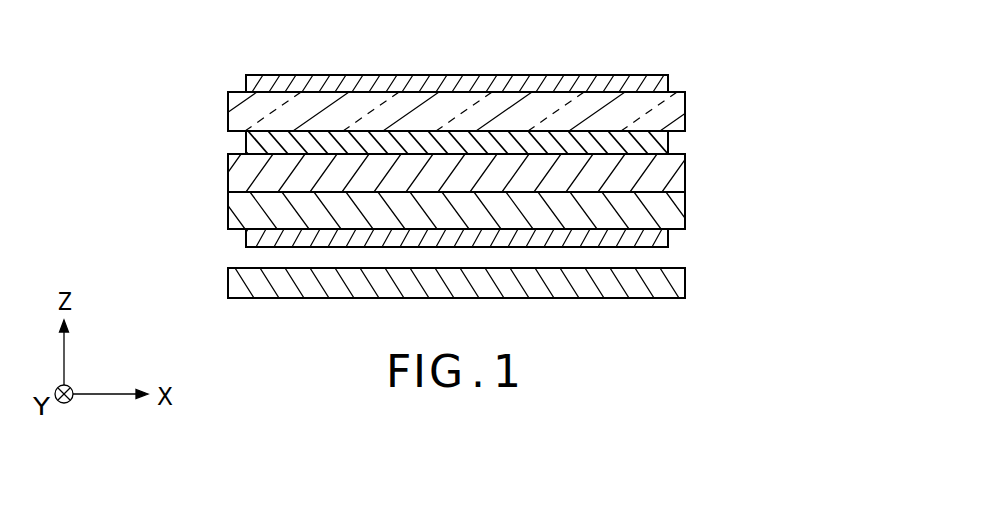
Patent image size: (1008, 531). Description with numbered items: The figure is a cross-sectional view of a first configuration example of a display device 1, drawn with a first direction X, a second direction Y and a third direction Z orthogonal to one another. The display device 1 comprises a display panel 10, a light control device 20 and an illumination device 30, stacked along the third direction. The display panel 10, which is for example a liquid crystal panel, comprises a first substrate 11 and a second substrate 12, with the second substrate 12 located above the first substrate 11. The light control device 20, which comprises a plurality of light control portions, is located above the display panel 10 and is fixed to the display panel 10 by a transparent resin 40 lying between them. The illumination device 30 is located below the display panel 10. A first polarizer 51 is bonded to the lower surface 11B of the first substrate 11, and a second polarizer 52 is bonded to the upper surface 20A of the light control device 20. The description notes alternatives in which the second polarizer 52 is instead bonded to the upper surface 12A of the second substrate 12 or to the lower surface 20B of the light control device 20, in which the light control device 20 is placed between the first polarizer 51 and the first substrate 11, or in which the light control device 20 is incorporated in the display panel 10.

The display device 1 is at (529, 186).
The display panel 10 is at (457, 194).
The first substrate 11 is at (680, 210).
The lower surface of the first substrate 11B is at (612, 236).
The second substrate 12 is at (680, 172).
The upper surface of the second substrate 12A is at (417, 150).
The light control device 20 is at (230, 116).
The upper surface of the light control device 20A is at (605, 90).
The lower surface of the light control device 20B is at (616, 146).
The illumination device 30 is at (230, 285).
The transparent resin 40 is at (248, 144).
The first polarizer 51 is at (668, 240).
The second polarizer 52 is at (668, 81).